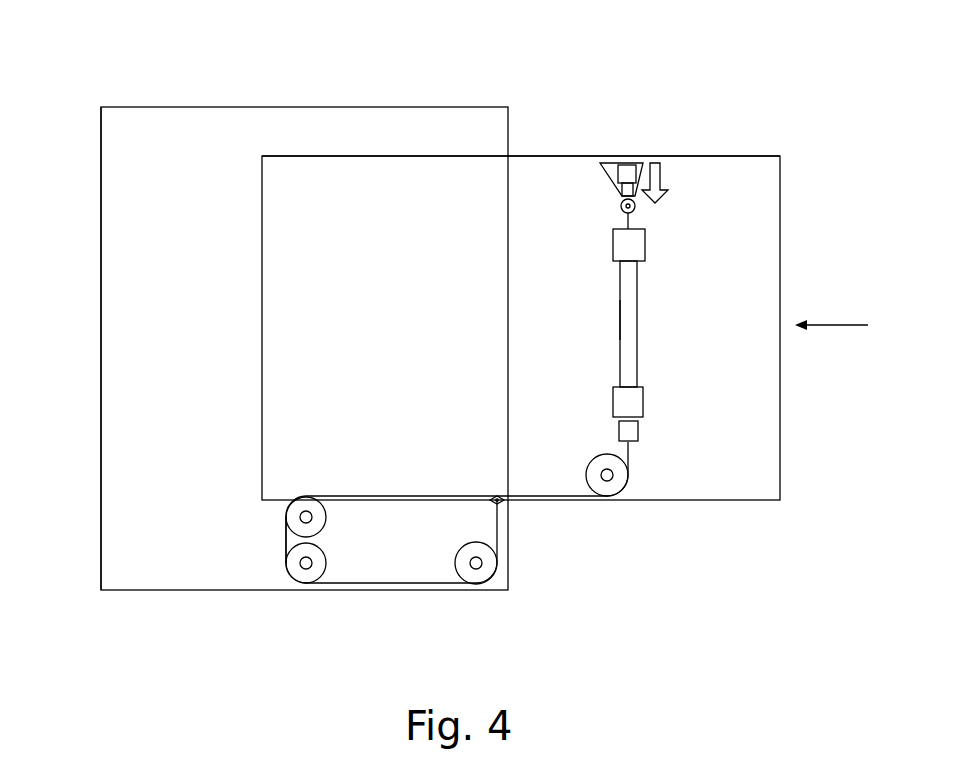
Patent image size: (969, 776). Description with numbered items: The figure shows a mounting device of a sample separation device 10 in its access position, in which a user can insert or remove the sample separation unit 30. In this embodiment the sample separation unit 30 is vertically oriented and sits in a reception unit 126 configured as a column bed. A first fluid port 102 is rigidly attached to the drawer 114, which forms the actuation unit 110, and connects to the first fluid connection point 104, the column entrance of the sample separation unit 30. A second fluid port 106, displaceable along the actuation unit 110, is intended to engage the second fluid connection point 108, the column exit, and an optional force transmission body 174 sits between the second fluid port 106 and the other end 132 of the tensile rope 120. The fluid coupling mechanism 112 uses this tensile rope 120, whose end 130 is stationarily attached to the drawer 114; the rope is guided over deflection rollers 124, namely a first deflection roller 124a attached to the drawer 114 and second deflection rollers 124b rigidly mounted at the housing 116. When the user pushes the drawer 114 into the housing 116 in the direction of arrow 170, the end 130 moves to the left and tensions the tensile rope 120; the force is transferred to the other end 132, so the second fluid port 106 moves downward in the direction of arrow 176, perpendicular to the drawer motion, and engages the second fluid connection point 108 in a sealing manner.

The sample separation device 10 is at (82, 100).
The housing 116 is at (100, 466).
The actuation unit 110 is at (786, 84).
The drawer 114 is at (700, 156).
The force transmission body 174 is at (603, 161).
The second fluid port 106 is at (632, 163).
The arrow 176 is at (655, 165).
The other end of the tensile rope 132 is at (637, 203).
The second fluid connection point 108 is at (630, 240).
The sample separation unit 30 is at (642, 318).
The reception unit 126 is at (608, 297).
The first fluid connection point 104 is at (632, 405).
The first fluid port 102 is at (640, 432).
The tensile rope 120 is at (632, 220).
The end of the tensile rope 130 is at (505, 505).
The fluid coupling mechanism 112 is at (262, 553).
The deflection roller 124 is at (288, 510).
The first deflection roller 124a is at (613, 480).
The second deflection rollers 124b is at (300, 519).
The arrow 170 is at (826, 325).